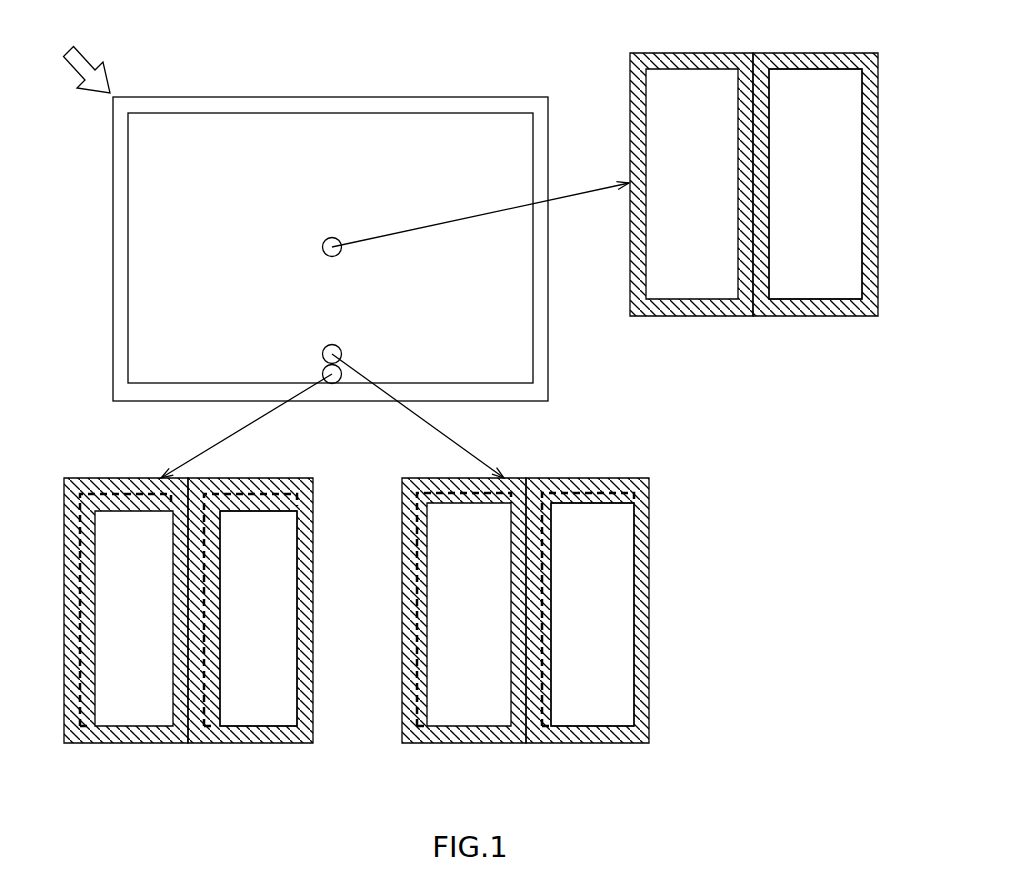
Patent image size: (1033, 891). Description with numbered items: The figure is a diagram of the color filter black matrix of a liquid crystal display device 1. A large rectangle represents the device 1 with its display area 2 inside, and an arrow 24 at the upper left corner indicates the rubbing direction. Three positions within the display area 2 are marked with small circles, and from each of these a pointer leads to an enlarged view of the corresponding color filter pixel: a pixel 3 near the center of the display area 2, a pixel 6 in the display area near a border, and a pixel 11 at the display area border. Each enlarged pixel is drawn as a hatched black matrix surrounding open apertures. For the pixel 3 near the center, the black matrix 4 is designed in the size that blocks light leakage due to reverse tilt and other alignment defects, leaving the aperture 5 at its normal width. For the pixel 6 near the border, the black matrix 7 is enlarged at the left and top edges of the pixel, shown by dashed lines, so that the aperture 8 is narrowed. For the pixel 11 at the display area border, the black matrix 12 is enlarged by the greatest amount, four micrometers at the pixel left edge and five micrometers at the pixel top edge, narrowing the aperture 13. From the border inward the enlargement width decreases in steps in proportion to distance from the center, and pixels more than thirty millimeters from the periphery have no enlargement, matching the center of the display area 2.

The liquid crystal display device 1 is at (186, 97).
The display area 2 is at (396, 113).
The pixel near the center of the display area 3 is at (879, 82).
The black matrix 4 is at (874, 154).
The aperture 5 is at (849, 252).
The pixel in the display area near a border 6 is at (648, 498).
The black matrix 7 is at (643, 566).
The aperture 8 is at (620, 664).
The pixel at a display area border 11 is at (313, 498).
The black matrix 12 is at (309, 565).
The aperture 13 is at (283, 664).
The arrow 24 is at (91, 59).